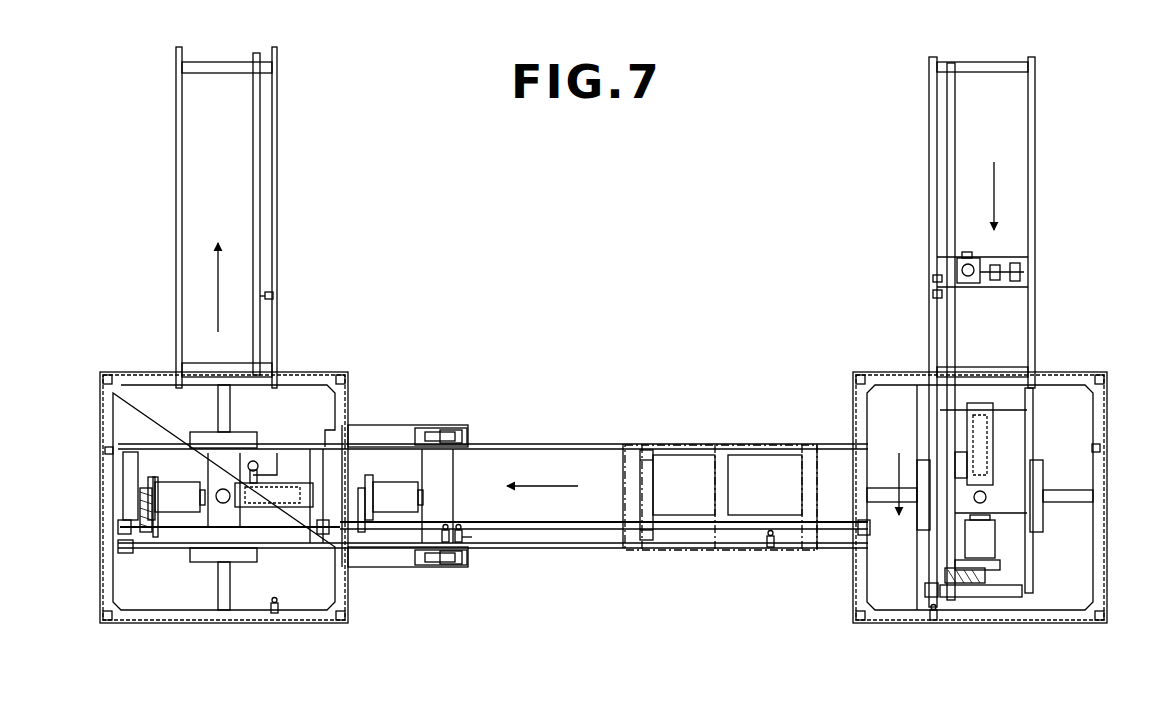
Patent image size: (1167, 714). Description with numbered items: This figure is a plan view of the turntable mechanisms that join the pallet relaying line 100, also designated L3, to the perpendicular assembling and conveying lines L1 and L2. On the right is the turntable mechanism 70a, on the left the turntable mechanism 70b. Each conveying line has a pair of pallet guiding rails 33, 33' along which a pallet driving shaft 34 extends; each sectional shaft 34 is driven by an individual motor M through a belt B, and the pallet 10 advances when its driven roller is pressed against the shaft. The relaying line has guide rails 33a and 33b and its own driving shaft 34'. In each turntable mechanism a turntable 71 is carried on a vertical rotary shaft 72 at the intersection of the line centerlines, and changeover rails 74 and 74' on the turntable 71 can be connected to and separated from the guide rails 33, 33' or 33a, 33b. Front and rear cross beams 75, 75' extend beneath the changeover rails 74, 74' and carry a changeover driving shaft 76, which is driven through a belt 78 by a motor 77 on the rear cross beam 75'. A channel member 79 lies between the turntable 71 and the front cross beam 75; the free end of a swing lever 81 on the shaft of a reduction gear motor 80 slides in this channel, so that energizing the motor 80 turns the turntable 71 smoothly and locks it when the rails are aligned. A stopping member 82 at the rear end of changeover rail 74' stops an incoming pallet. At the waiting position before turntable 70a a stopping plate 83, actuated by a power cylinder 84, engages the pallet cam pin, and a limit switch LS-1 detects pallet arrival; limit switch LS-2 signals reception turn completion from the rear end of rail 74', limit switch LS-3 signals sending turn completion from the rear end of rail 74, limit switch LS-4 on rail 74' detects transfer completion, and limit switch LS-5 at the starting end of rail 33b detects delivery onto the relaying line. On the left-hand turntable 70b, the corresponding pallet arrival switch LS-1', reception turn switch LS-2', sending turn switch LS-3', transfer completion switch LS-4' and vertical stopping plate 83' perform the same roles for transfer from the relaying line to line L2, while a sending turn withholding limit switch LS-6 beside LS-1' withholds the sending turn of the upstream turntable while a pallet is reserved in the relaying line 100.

The pallet 10 is at (725, 458).
The pallet guiding rail 33 is at (599, 320).
The pallet guiding rail 33' is at (604, 327).
The guide rail of relaying line 33a is at (575, 445).
The guide rail of relaying line 33b is at (583, 548).
The pallet driving shaft 34 is at (626, 326).
The driving shaft of relaying line 34' is at (604, 507).
The turntable mechanism 70a is at (1020, 630).
The turntable mechanism 70b is at (195, 627).
The turntable 71 is at (220, 460).
The vertical rotary shaft 72 is at (218, 492).
The changeover rail 74 is at (600, 420).
The changeover rail 74' is at (494, 493).
The front cross beam 75 is at (408, 483).
The rear cross beam 75' is at (96, 482).
The changeover driving shaft 76 is at (272, 530).
The motor 77 is at (178, 488).
The belt 78 is at (142, 508).
The channel member 79 is at (263, 507).
The reduction gear motor 80 is at (262, 455).
The swing lever 81 is at (258, 468).
The stopping member 82 is at (118, 548).
The stopping plate 83 is at (931, 263).
The vertical stopping plate 83' is at (494, 550).
The power cylinder 84 is at (1010, 272).
The pallet relaying line 100 is at (525, 443).
The assembling and conveying line L1 is at (1035, 190).
The assembling and conveying line L2 is at (176, 178).
The relaying line L3 is at (622, 443).
The pallet arrival detecting limit switch LS-1 is at (891, 288).
The pallet arrival detecting limit switch LS-1' is at (491, 598).
The reception turn completion detecting limit switch LS-2 is at (914, 637).
The reception turn completion detecting limit switch LS-2' is at (72, 430).
The sending turn completion detecting limit switch LS-3 is at (1127, 436).
The sending turn completion detecting limit switch LS-3' is at (283, 634).
The transfer completion detecting limit switch LS-4 is at (821, 587).
The transfer completion detecting limit switch LS-4' is at (171, 590).
The limit switch LS-5 is at (273, 296).
The sending turn withholding limit switch LS-6 is at (424, 598).
The motor M is at (390, 492).
The belt B is at (369, 583).